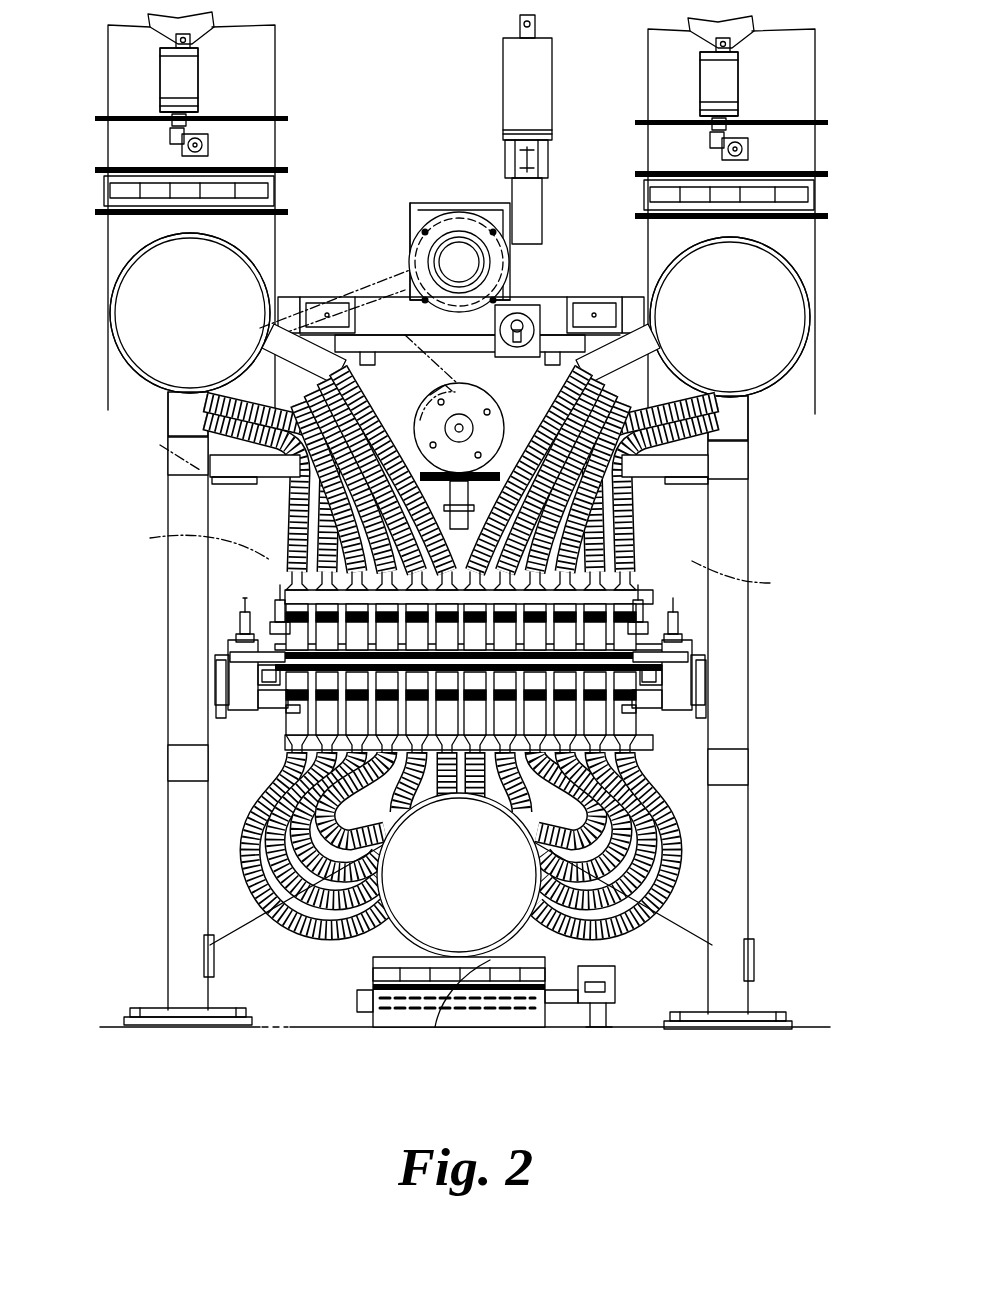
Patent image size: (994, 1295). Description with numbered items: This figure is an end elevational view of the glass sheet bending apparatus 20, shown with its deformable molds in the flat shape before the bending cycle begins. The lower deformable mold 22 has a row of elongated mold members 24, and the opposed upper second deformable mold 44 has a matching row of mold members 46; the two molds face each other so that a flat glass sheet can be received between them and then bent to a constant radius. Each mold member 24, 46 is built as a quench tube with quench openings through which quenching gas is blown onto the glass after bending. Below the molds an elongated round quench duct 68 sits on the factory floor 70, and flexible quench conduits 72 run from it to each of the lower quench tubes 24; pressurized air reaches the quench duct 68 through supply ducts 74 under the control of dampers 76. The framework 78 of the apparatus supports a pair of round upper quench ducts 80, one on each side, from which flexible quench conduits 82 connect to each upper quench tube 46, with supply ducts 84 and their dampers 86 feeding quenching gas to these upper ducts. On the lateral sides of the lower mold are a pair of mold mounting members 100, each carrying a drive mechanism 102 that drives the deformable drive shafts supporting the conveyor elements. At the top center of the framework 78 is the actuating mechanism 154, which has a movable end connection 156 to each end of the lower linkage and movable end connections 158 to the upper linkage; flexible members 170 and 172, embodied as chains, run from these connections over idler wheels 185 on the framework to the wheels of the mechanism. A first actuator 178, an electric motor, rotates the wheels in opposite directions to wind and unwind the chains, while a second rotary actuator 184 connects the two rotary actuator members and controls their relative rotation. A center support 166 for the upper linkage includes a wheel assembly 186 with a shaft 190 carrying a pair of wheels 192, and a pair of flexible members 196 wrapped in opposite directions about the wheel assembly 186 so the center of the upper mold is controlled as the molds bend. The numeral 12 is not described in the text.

The die head assembly 12 is at (464, 663).
The glass sheet bending apparatus 20 is at (409, 67).
The deformable mold 22 is at (216, 712).
The mold members 24 is at (300, 750).
The second deformable mold 44 is at (228, 690).
The mold members 46 is at (320, 585).
The quench duct 68 is at (385, 940).
The factory floor 70 is at (630, 1025).
The flexible quench conduits 72 is at (248, 855).
The supply ducts 74 is at (400, 1028).
The dampers 76 is at (520, 1015).
The framework 78 is at (764, 524).
The upper quench ducts 80 is at (128, 360).
The flexible quench conduits 82 is at (322, 520).
The supply ducts 84 is at (108, 60).
The dampers 86 is at (198, 72).
The mold mounting members 100 is at (230, 657).
The drive mechanism 102 is at (262, 690).
The actuating mechanism 154 is at (486, 181).
The movable end connection 156 is at (236, 636).
The movable end connections 158 is at (240, 612).
The center support 166 is at (480, 400).
The flexible members 170 is at (150, 540).
The flexible members 172 is at (175, 448).
The first actuator 178 is at (503, 62).
The second rotary actuator 184 is at (535, 310).
The idler wheels 185 is at (318, 297).
The wheel assembly 186 is at (440, 392).
The shaft 190 is at (442, 404).
The wheels 192 is at (480, 385).
The flexible members 196 is at (430, 336).